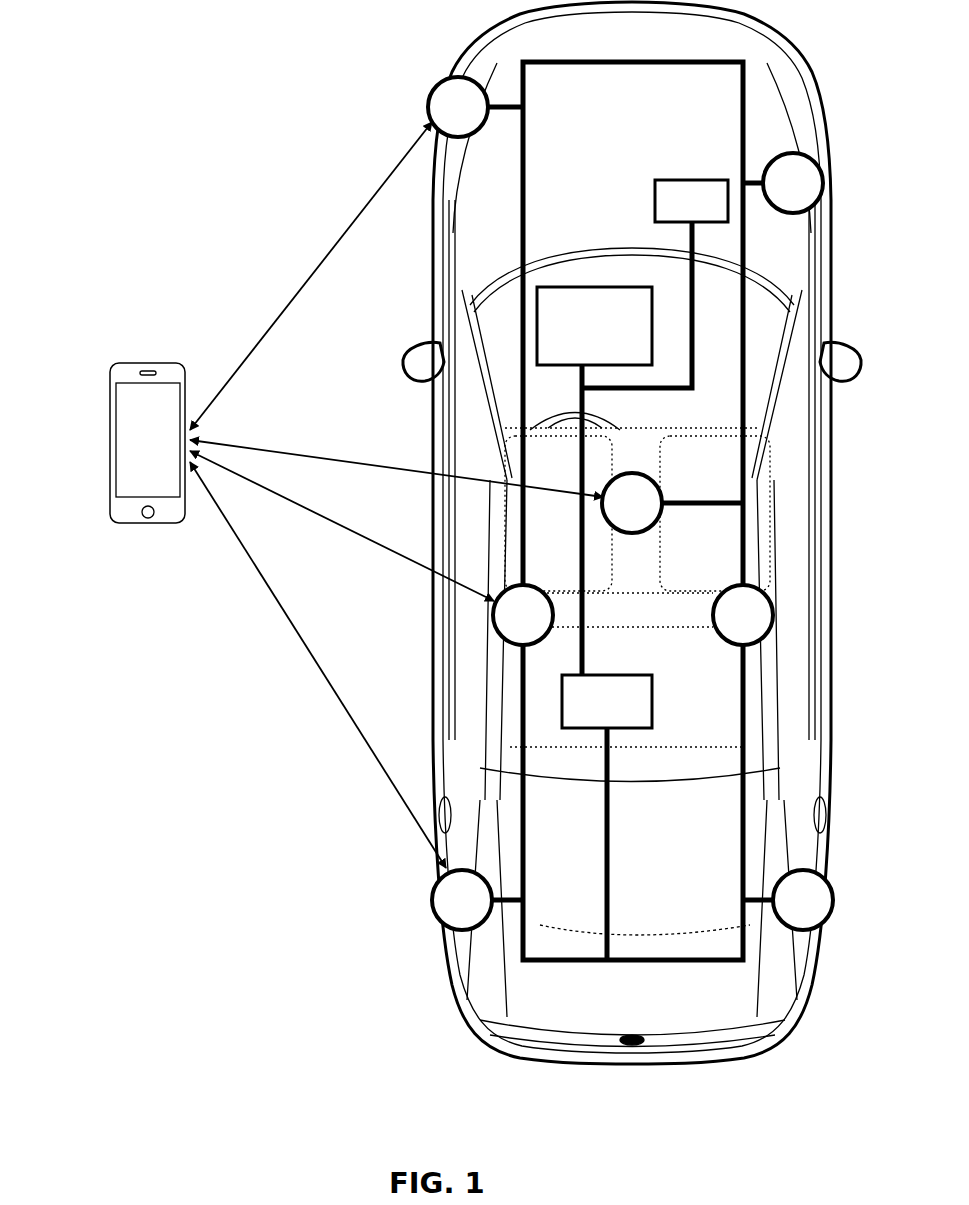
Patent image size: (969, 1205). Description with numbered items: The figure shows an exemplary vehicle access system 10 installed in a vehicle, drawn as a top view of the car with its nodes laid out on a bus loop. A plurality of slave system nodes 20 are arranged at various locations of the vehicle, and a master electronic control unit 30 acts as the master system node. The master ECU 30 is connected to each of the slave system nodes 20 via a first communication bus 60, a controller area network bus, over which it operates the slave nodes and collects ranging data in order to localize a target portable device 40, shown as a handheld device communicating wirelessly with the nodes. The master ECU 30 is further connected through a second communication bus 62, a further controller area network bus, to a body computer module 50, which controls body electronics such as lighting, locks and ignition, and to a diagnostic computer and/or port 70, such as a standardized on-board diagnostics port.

The vehicle access system 10 is at (82, 80).
The slave system nodes 20 is at (632, 493).
The master electronic control unit 30 is at (653, 705).
The target portable device 40 is at (110, 393).
The body computer module 50 is at (653, 328).
The first communication bus 60 is at (610, 865).
The second communication bus 62 is at (587, 574).
The diagnostic computer and/or port 70 is at (655, 193).